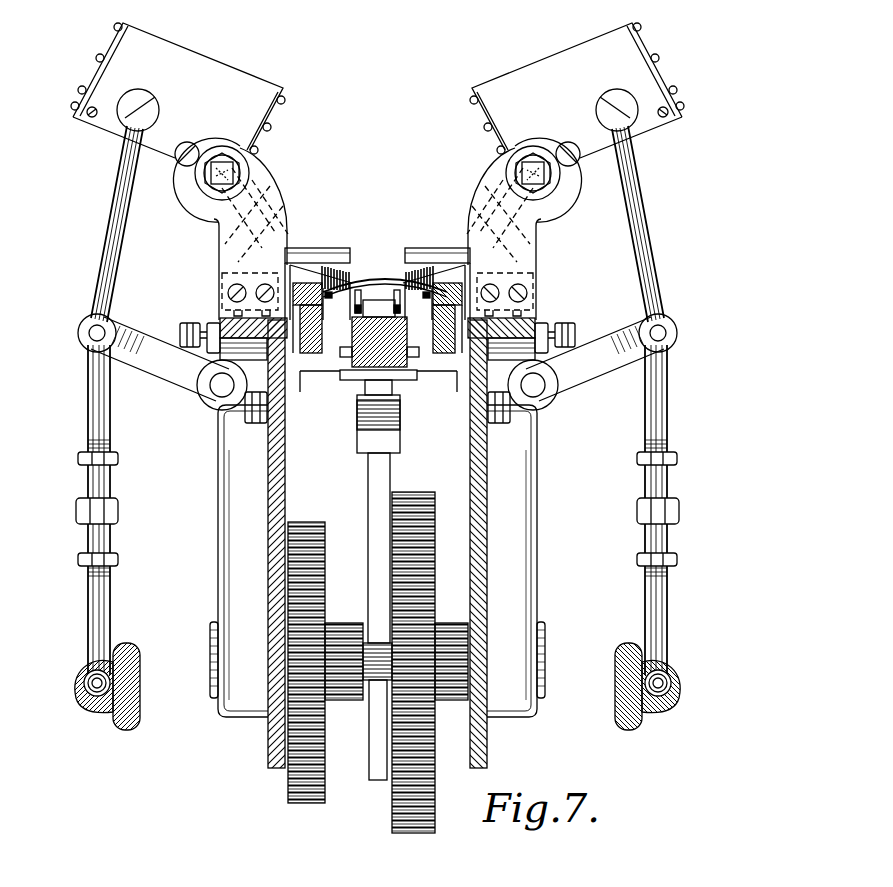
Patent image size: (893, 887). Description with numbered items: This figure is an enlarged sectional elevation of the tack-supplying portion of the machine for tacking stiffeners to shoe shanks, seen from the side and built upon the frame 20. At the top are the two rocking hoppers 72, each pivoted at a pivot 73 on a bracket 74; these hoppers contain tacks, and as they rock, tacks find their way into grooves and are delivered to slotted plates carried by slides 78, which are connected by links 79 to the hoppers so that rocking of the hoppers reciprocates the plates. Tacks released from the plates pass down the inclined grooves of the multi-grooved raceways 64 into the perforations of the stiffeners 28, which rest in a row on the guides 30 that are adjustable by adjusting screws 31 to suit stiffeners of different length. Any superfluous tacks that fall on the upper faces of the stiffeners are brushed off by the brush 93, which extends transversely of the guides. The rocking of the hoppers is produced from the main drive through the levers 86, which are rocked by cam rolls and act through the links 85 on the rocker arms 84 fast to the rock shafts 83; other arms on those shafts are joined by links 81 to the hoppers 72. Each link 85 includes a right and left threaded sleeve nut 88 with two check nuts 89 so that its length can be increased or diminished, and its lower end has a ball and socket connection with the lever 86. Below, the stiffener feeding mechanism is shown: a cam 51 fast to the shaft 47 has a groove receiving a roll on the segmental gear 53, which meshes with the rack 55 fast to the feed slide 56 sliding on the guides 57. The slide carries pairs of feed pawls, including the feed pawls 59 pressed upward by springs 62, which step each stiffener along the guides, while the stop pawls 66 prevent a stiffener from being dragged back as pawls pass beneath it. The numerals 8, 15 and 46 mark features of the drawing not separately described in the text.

The bracket 8 is at (282, 178).
The lever 15 is at (170, 106).
The frame 20 is at (391, 543).
The stiffeners 28 is at (392, 282).
The guides 30 is at (256, 300).
The adjusting screws 31 is at (173, 333).
The gear 46 is at (307, 790).
The shaft 47 is at (375, 672).
The cam 51 is at (436, 827).
The segmental gear 53 is at (375, 477).
The rack 55 is at (362, 397).
The feed slide 56 is at (378, 323).
The guides 57 is at (336, 364).
The feed pawls 59 is at (384, 282).
The springs 62 is at (353, 326).
The multi-grooved raceways 64 is at (317, 266).
The stop pawls 66 is at (354, 308).
The rocking hoppers 72 is at (183, 52).
The pivots 73 is at (210, 186).
The brackets 74 is at (223, 260).
The slides 78 is at (258, 210).
The links 79 is at (193, 217).
The links 81 is at (110, 257).
The rock shafts 83 is at (224, 388).
The rocker arms 84 is at (146, 372).
The links 85 is at (95, 612).
The levers 86 is at (121, 730).
The sleeve nut 88 is at (78, 512).
The check nuts 89 is at (80, 458).
The brush 93 is at (352, 262).